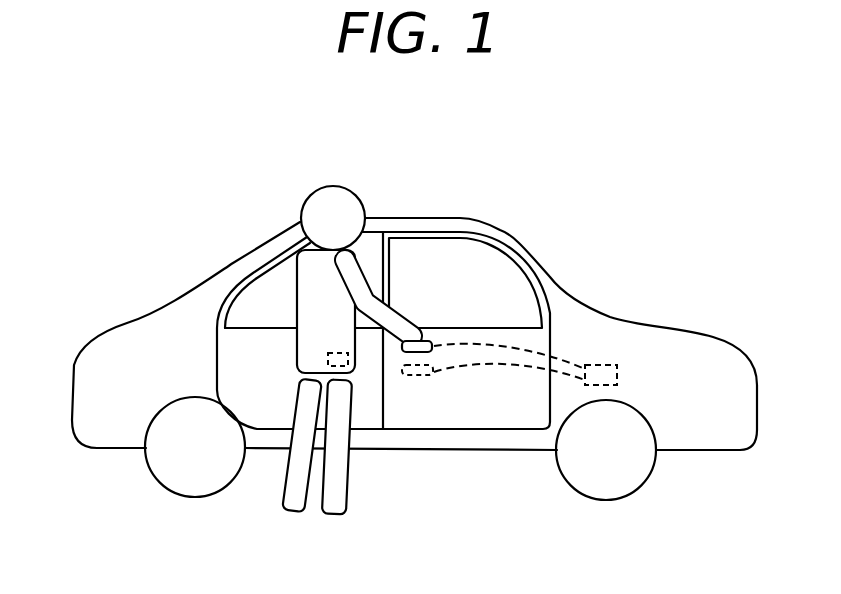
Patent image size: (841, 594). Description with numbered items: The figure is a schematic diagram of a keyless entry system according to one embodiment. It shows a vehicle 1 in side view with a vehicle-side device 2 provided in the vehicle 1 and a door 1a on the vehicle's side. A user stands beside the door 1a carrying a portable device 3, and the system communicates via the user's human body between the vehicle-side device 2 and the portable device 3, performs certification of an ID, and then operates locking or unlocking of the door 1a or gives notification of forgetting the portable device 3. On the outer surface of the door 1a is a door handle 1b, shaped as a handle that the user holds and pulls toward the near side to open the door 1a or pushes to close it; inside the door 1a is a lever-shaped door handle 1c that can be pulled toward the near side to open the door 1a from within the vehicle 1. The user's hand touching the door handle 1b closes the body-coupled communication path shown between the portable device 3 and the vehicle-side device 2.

The vehicle 1 is at (502, 228).
The door 1a is at (513, 429).
The door handle 1b is at (420, 340).
The door handle 1c is at (417, 377).
The vehicle-side device 2 is at (614, 365).
The portable device 3 is at (348, 367).